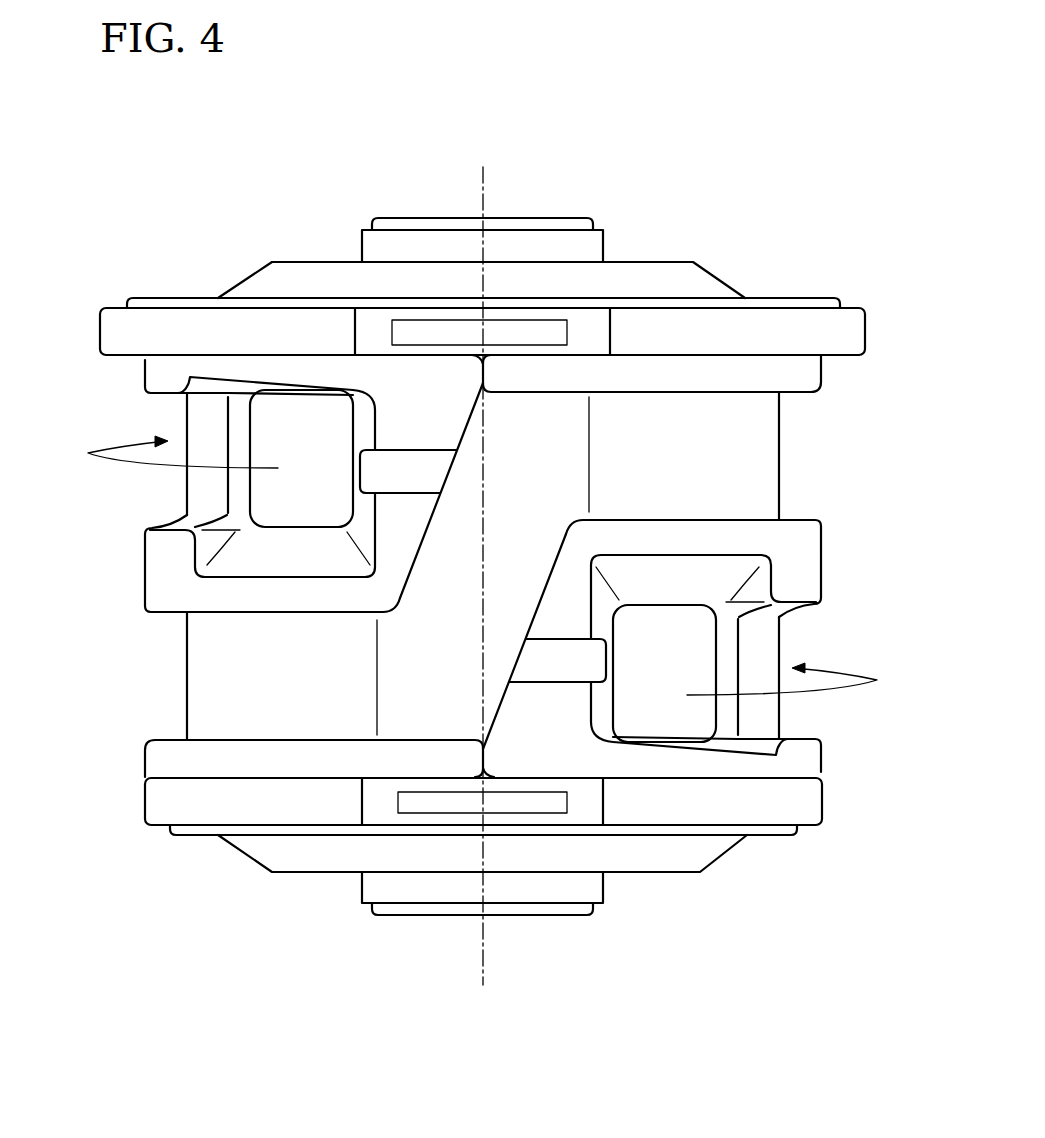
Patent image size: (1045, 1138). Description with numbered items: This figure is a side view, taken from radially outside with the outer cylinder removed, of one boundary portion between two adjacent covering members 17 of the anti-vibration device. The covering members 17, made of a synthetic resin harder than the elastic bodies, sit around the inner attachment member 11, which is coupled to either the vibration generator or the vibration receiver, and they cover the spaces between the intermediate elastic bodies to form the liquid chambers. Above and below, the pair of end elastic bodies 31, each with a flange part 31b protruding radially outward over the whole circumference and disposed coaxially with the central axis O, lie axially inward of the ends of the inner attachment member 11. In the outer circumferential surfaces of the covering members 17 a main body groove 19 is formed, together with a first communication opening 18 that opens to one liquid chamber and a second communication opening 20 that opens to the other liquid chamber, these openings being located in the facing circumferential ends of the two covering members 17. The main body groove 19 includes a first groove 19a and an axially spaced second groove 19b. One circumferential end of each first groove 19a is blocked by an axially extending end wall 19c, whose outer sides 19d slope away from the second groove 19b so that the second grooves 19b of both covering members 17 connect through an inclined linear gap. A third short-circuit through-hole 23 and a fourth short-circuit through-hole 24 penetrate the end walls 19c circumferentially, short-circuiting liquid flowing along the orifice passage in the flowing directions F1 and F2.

The central axis O is at (482, 191).
The inner attachment member 11 is at (580, 217).
The covering member 17 is at (144, 563).
The first communication opening 18 is at (252, 427).
The main body groove 19 is at (782, 477).
The first groove 19a is at (184, 488).
The second groove 19b is at (186, 688).
The end wall 19c is at (467, 350).
The outer side 19d is at (553, 570).
The second communication opening 20 is at (615, 704).
The third short-circuit through-hole 23 is at (405, 467).
The fourth short-circuit through-hole 24 is at (560, 673).
The end elastic body 31 is at (861, 306).
The flange part 31b is at (100, 322).
The flowing direction F1 is at (163, 453).
The flowing direction F2 is at (801, 682).